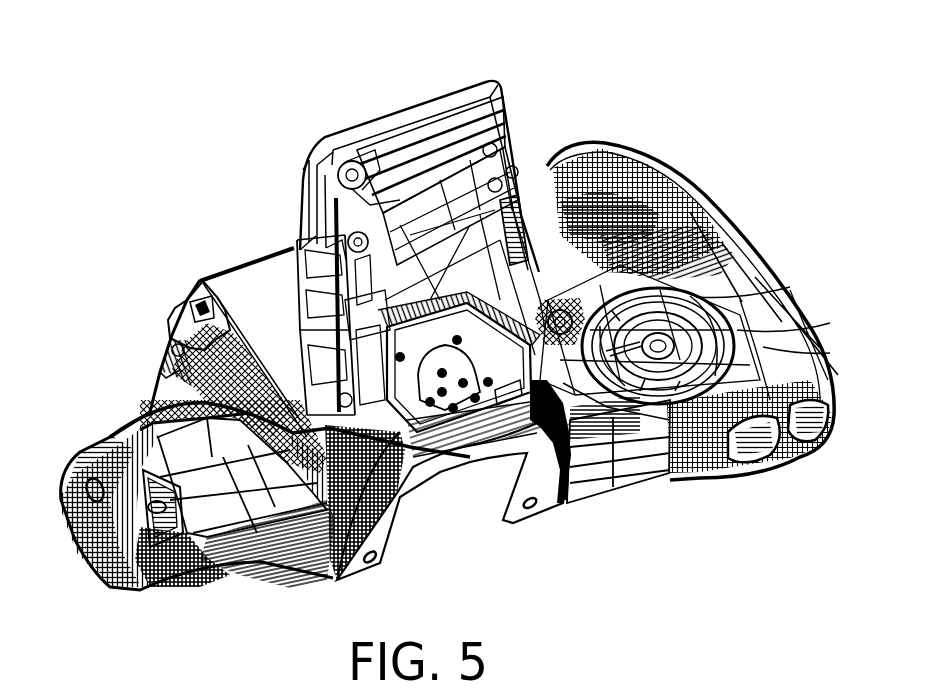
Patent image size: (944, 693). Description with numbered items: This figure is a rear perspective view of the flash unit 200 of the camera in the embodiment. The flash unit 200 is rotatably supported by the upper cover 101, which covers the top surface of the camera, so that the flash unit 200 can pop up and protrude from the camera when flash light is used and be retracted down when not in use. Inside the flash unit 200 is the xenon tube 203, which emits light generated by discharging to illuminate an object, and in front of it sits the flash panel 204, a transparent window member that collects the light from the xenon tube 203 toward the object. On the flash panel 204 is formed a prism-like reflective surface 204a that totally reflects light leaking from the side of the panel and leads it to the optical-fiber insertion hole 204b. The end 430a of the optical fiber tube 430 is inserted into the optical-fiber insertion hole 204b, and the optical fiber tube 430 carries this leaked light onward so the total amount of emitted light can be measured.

The flash unit 200 is at (512, 70).
The flash panel 204 is at (403, 130).
The xenon tube 203 is at (348, 160).
The reflective surface 204a is at (312, 163).
The optical-fiber insertion hole 204b is at (320, 202).
The optical fiber tube 430 is at (297, 287).
The end of the optical fiber tube 430a is at (337, 305).
The upper cover 101 is at (173, 367).